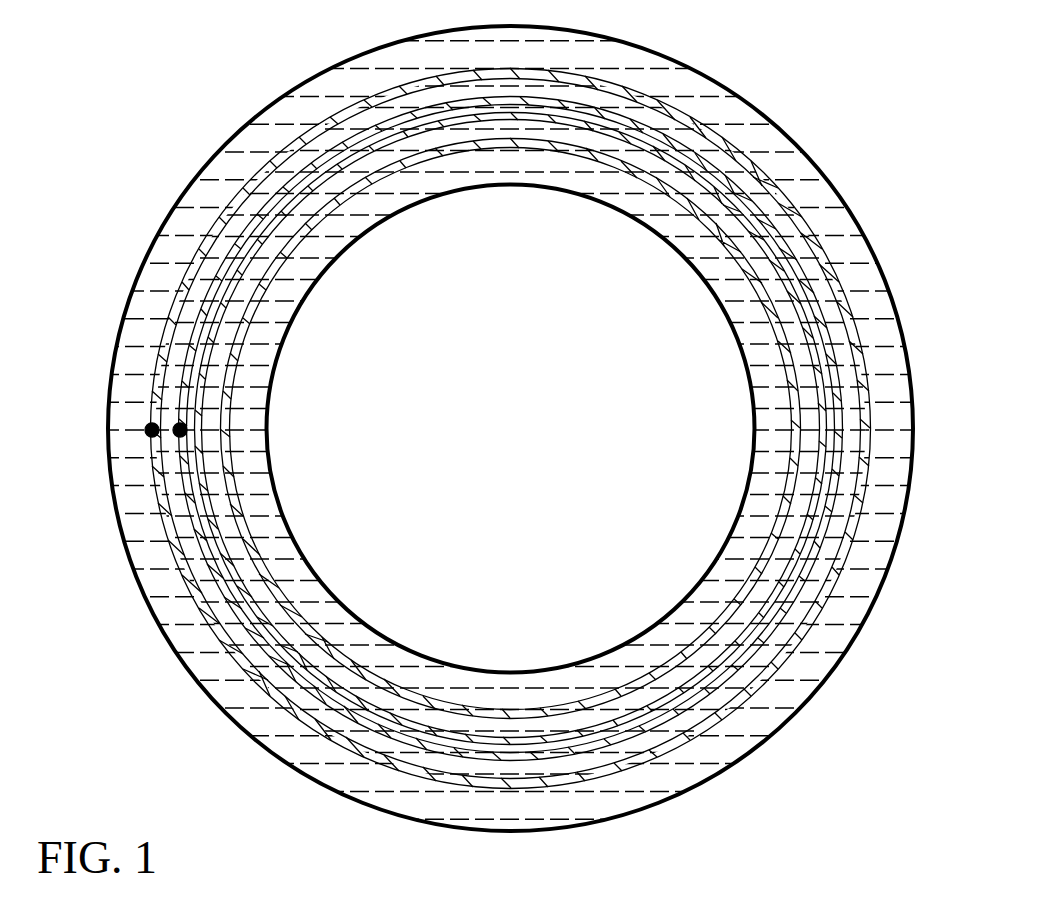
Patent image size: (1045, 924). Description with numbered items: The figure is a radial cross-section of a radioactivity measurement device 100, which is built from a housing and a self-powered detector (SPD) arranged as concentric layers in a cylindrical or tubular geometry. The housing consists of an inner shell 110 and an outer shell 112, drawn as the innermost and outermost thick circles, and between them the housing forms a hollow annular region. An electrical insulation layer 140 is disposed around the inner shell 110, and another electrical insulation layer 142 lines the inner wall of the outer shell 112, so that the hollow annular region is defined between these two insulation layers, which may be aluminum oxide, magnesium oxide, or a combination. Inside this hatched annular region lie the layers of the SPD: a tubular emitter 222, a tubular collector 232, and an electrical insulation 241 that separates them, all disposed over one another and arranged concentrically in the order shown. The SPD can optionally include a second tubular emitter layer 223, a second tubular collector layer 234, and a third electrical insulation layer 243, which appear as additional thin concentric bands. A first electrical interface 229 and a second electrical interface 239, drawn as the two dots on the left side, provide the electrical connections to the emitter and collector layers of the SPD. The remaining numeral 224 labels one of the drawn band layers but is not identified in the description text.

The radioactivity measurement device 100 is at (150, 80).
The inner shell 110 is at (268, 450).
The outer shell 112 is at (158, 622).
The electrical insulation layer 140 is at (511, 429).
The electrical insulation layer 142 is at (822, 208).
The tubular emitter 222 is at (511, 441).
The second tubular emitter layer 223 is at (287, 640).
The reinforcement band layer 224 is at (393, 727).
The first electrical interface 229 is at (180, 428).
The tubular collector 232 is at (548, 428).
The second tubular collector layer 234 is at (802, 420).
The second electrical interface 239 is at (150, 430).
The electrical insulation 241 is at (722, 152).
The third electrical insulation layer 243 is at (511, 429).